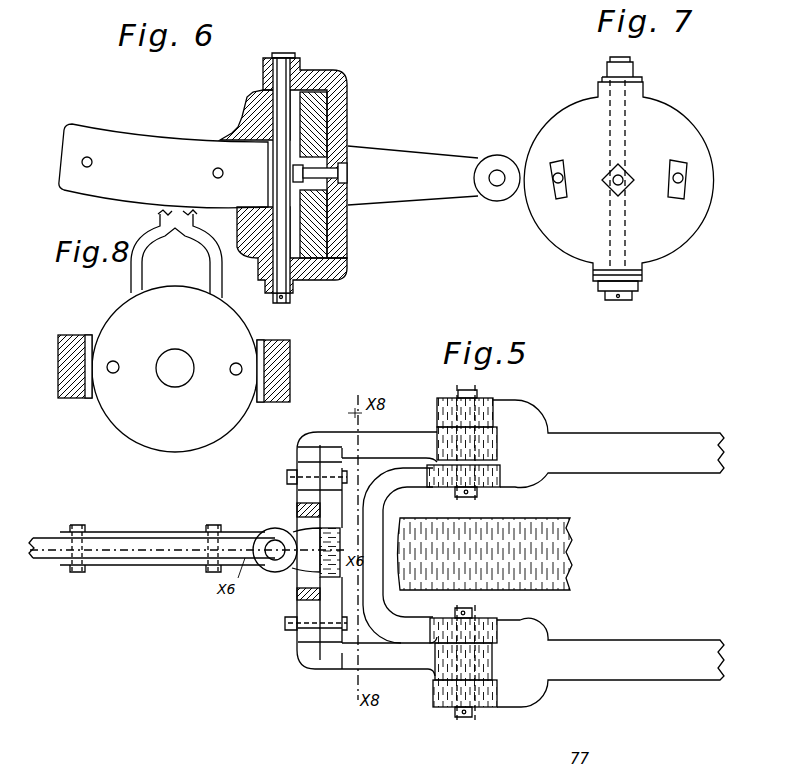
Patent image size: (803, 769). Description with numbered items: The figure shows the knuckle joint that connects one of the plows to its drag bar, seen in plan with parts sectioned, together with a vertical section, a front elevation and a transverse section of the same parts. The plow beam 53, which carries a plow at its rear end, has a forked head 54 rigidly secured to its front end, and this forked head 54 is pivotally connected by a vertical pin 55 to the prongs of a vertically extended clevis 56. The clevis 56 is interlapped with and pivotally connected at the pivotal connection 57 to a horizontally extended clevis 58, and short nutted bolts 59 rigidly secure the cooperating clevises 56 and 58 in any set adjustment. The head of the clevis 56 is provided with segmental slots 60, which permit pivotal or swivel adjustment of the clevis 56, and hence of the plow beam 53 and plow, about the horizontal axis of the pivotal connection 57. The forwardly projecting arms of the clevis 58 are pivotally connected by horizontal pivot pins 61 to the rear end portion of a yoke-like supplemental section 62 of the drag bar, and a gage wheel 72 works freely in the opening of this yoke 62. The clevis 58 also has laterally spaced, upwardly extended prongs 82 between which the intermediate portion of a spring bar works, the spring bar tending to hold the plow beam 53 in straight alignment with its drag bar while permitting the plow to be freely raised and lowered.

In FIG. 5, the plow beam 53 is at (165, 558).
In FIG. 6, the forked head 54 is at (245, 100).
In FIG. 5, the forked head 54 is at (120, 532).
In FIG. 6, the vertical pin 55 is at (300, 68).
In FIG. 7, the vertical pin 55 is at (625, 303).
In FIG. 5, the vertical pin 55 is at (275, 545).
In FIG. 6, the vertically extended clevis 56 is at (337, 105).
In FIG. 7, the vertically extended clevis 56 is at (663, 242).
In FIG. 5, the vertically extended clevis 56 is at (332, 463).
In FIG. 6, the pivotal connection 57 is at (333, 183).
In FIG. 7, the pivotal connection 57 is at (613, 192).
In FIG. 6, the horizontally extended clevis 58 is at (402, 160).
In FIG. 8, the horizontally extended clevis 58 is at (130, 428).
In FIG. 5, the horizontally extended clevis 58 is at (400, 440).
In FIG. 5, the short nutted bolt 59 is at (287, 478).
In FIG. 7, the segmental slot 60 is at (560, 165).
In FIG. 5, the horizontal pivot pin 61 is at (458, 393).
In FIG. 5, the supplemental section of the drag bar 62 is at (648, 442).
In FIG. 5, the gage wheel 72 is at (550, 558).
In FIG. 8, the upwardly extended prong 82 is at (176, 254).